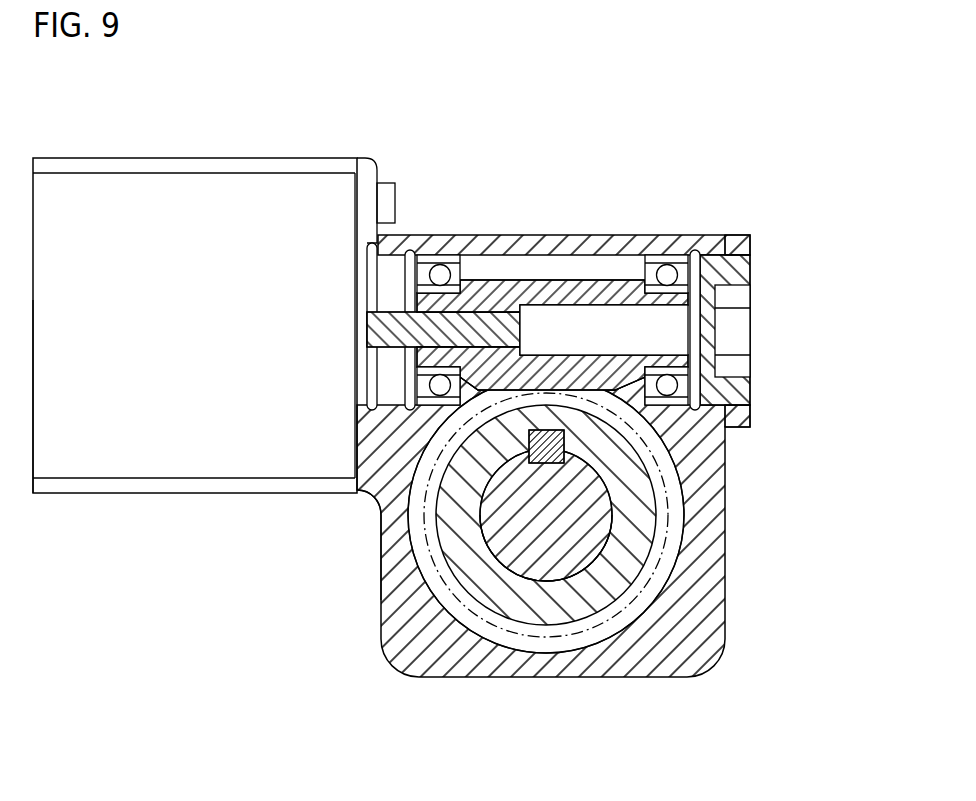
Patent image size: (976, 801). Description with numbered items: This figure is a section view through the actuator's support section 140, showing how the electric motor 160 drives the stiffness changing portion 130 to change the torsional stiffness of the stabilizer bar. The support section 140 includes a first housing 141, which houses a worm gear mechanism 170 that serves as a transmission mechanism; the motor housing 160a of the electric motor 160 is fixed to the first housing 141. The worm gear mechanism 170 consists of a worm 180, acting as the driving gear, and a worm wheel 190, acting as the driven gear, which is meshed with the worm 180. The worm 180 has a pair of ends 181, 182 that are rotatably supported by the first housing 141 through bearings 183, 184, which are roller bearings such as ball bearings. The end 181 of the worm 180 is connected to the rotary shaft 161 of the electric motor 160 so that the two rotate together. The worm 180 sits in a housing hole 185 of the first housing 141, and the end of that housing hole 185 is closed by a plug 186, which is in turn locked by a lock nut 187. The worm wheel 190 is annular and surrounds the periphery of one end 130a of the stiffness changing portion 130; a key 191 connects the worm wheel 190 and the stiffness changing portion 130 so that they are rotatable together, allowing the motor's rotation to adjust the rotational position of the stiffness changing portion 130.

The stiffness changing portion 130 is at (542, 615).
The one end of the stiffness changing portion 130a is at (597, 545).
The support section 140 is at (728, 610).
The first housing 141 is at (381, 578).
The electric motor 160 is at (201, 150).
The motor housing 160a is at (145, 463).
The rotary shaft 161 is at (407, 328).
The worm gear mechanism 170 is at (520, 248).
The worm 180 is at (547, 268).
The end of the worm 181 is at (473, 290).
The end of the worm 182 is at (632, 290).
The bearing 183 is at (440, 270).
The bearing 184 is at (667, 270).
The housing hole 185 is at (598, 262).
The plug 186 is at (743, 392).
The lock nut 187 is at (747, 420).
The worm wheel 190 is at (575, 590).
The key 191 is at (547, 452).